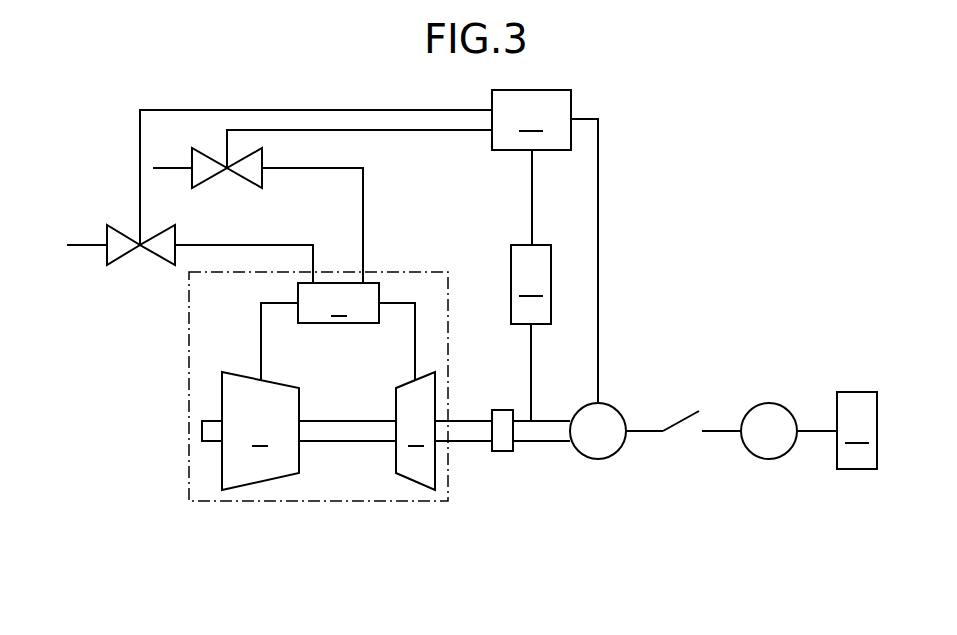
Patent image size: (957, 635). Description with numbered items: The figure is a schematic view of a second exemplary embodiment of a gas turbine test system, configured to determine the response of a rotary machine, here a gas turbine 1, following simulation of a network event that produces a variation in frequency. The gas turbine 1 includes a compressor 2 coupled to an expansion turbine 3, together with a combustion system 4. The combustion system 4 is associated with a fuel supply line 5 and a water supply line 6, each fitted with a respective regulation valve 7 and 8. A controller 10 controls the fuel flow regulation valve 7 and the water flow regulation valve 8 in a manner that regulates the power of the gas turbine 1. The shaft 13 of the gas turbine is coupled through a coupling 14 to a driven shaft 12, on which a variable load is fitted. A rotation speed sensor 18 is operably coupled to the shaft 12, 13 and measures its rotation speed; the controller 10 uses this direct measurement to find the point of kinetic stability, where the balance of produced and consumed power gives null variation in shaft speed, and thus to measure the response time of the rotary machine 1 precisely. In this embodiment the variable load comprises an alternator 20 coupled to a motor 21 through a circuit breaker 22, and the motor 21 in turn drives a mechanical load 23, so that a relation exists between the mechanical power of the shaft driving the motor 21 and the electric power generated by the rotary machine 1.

The gas turbine 1 is at (318, 417).
The compressor 2 is at (250, 431).
The expansion turbine 3 is at (367, 431).
The combustion system 4 is at (338, 331).
The fuel supply line 5 is at (173, 166).
The water supply line 6 is at (88, 243).
The fuel flow regulation valve 7 is at (212, 183).
The water flow regulation valve 8 is at (123, 262).
The controller 10 is at (369, 246).
The driven shaft 12 is at (545, 443).
The shaft of the gas turbine 13 is at (476, 444).
The coupling 14 is at (502, 452).
The rotation speed sensor 18 is at (531, 333).
The alternator 20 is at (613, 406).
The motor 21 is at (790, 406).
The circuit breaker 22 is at (683, 407).
The mechanical load 23 is at (837, 430).